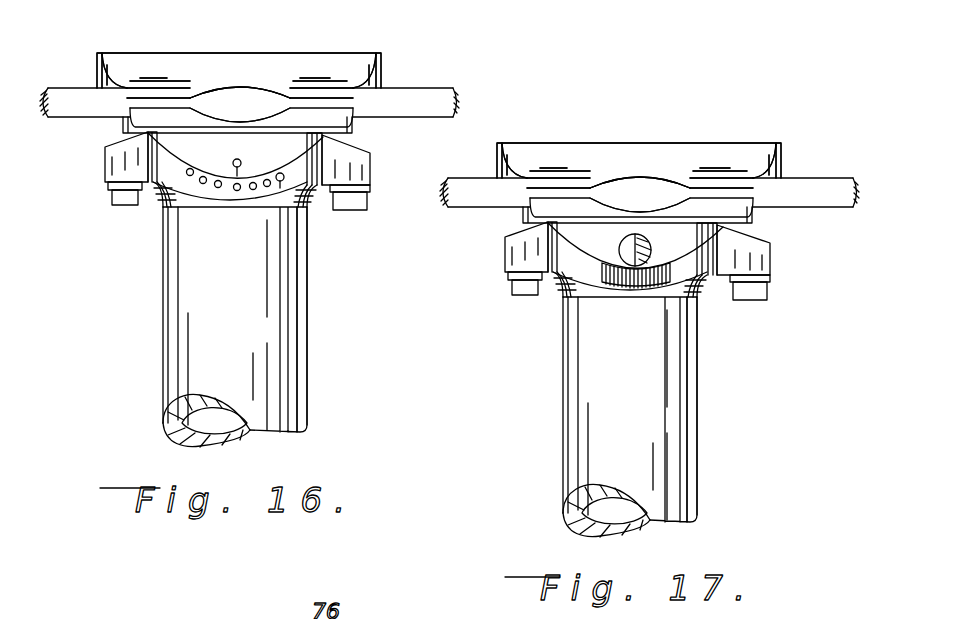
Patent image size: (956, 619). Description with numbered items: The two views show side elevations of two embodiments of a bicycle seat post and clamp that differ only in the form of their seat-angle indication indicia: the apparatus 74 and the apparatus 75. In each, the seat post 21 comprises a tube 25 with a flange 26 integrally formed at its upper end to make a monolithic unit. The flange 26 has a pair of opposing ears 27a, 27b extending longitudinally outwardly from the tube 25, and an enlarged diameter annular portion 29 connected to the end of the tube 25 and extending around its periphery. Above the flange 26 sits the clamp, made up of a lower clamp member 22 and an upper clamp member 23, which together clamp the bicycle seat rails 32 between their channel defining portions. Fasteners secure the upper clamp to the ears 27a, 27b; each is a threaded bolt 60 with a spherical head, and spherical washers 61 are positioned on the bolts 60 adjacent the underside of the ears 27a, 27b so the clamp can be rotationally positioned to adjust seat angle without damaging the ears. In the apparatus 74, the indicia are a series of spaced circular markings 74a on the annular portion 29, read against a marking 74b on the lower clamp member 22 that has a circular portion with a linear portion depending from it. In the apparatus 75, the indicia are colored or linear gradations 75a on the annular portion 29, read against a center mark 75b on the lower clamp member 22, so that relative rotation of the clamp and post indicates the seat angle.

In FIG. 16, the apparatus 74 is at (327, 38).
In FIG. 17, the apparatus 75 is at (698, 120).
In FIG. 16, the upper clamp member 23 is at (370, 54).
In FIG. 17, the upper clamp member 23 is at (723, 142).
In FIG. 16, the bicycle seat rails 32 is at (425, 100).
In FIG. 17, the bicycle seat rails 32 is at (803, 180).
In FIG. 16, the marking 74b is at (247, 160).
In FIG. 17, the center mark 75b is at (647, 250).
In FIG. 16, the lower clamp member 22 is at (380, 120).
In FIG. 17, the lower clamp member 22 is at (777, 203).
In FIG. 16, the ear 27a is at (105, 165).
In FIG. 17, the ear 27a is at (520, 245).
In FIG. 16, the ear 27b is at (372, 160).
In FIG. 17, the ear 27b is at (770, 252).
In FIG. 16, the spherical washers 61 is at (122, 200).
In FIG. 17, the spherical washers 61 is at (512, 280).
In FIG. 16, the threaded bolt 60 is at (120, 205).
In FIG. 17, the threaded bolt 60 is at (517, 282).
In FIG. 16, the spaced circular markings 74a is at (205, 200).
In FIG. 17, the colored or linear gradations 75a is at (617, 292).
In FIG. 16, the enlarged diameter annular portion 29 is at (170, 207).
In FIG. 17, the enlarged diameter annular portion 29 is at (567, 293).
In FIG. 16, the flange 26 is at (290, 210).
In FIG. 17, the flange 26 is at (700, 300).
In FIG. 16, the seat post 21 is at (160, 308).
In FIG. 17, the seat post 21 is at (558, 375).
In FIG. 16, the tube 25 is at (307, 288).
In FIG. 17, the tube 25 is at (700, 382).